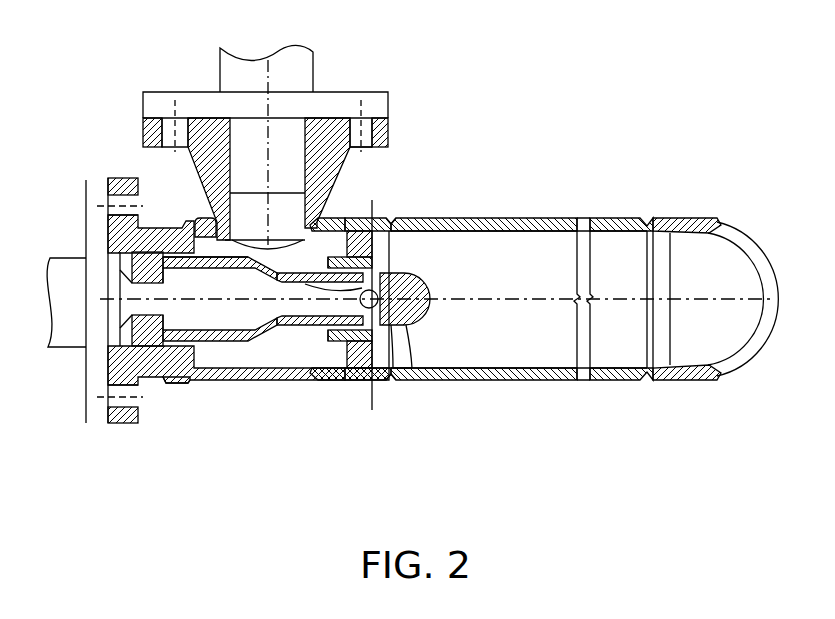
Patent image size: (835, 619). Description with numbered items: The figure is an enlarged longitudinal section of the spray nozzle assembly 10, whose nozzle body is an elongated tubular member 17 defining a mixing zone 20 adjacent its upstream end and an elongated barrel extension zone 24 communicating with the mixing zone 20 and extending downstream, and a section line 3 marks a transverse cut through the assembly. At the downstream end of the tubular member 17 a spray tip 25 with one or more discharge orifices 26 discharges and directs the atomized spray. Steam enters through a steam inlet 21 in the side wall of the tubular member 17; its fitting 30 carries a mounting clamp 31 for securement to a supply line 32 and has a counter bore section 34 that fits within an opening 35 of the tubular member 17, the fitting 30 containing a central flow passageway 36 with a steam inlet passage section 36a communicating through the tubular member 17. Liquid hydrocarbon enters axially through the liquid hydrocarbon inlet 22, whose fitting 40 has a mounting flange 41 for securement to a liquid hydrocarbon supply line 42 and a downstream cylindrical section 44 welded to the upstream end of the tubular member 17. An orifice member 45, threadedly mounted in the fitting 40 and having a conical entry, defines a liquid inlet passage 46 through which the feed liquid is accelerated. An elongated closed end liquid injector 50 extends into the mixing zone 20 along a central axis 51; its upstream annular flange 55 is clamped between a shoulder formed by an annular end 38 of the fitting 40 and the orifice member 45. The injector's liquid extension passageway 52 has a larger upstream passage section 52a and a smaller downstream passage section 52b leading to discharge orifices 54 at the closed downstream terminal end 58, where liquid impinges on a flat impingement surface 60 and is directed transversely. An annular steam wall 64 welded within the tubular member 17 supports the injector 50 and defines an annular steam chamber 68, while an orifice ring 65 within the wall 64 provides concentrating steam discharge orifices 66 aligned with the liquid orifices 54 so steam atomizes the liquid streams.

The section line 3- 3 is at (372, 410).
The spray nozzle assembly 10 is at (557, 199).
The tubular member 17 is at (487, 218).
The mixing zone 20 is at (398, 352).
The steam inlet 21 is at (341, 159).
The liquid hydrocarbon inlet 22 is at (156, 376).
The barrel extension zone 24 is at (612, 371).
The spray tip 25 is at (690, 218).
The discharge orifice 26 is at (760, 253).
The fitting 30 is at (165, 150).
The mounting clamp 31 is at (388, 132).
The supply line 32 is at (314, 58).
The counter bore section 34 is at (206, 218).
The opening 35 is at (328, 262).
The central flow passageway 36 is at (243, 243).
The steam inlet passage section 36a is at (250, 255).
The annular end 38 is at (187, 278).
The fitting 40 is at (108, 218).
The mounting flange 41 is at (118, 423).
The liquid hydrocarbon supply line 42 is at (60, 348).
The cylindrical section 44 is at (178, 384).
The orifice member 45 is at (108, 395).
The liquid inlet passage 46 is at (122, 306).
The liquid injector 50 is at (212, 351).
The central axis 51 is at (508, 300).
The liquid extension passageway 52 is at (249, 341).
The upstream passage section 52a is at (160, 226).
The downstream passage section 52b is at (376, 280).
The discharge orifices 54 is at (392, 273).
The annular flange 55 is at (135, 246).
The closed downstream terminal end 58 is at (410, 328).
The impingement surface 60 is at (368, 381).
The annular steam wall 64 is at (393, 221).
The orifice ring 65 is at (373, 258).
The steam discharge orifices 66 is at (330, 345).
The annular steam chamber 68 is at (320, 226).